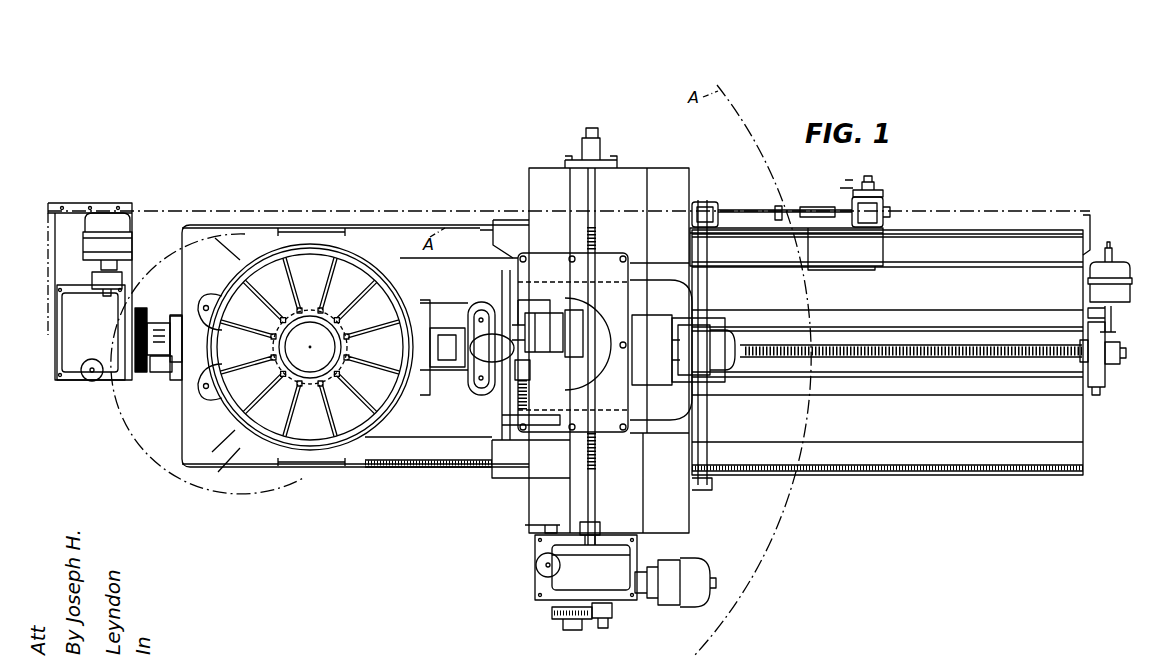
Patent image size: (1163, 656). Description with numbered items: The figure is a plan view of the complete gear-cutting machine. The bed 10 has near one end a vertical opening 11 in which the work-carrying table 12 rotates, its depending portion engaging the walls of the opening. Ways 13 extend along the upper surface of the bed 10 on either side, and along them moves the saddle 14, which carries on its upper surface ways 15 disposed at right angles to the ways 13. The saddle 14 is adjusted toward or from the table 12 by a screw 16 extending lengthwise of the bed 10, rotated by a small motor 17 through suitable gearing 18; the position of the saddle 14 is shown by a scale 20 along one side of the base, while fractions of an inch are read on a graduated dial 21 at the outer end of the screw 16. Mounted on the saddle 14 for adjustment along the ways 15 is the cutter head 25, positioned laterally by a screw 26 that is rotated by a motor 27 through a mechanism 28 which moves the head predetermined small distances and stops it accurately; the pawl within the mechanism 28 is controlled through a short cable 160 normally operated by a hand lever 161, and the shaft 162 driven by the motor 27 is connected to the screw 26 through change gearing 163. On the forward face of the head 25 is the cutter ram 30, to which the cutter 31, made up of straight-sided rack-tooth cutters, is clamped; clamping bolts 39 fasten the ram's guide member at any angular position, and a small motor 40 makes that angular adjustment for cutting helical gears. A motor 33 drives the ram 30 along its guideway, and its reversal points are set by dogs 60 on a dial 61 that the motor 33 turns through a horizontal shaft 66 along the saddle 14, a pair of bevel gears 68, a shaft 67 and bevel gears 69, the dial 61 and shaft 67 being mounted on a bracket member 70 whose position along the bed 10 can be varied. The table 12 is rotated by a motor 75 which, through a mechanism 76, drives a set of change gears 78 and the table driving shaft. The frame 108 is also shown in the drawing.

The bed 10 is at (255, 468).
The vertical opening 11 is at (215, 405).
The work-carrying table 12 is at (318, 255).
The ways 13 is at (948, 237).
The saddle 14 is at (500, 222).
The ways 15 is at (541, 178).
The screw 16 is at (885, 335).
The motor 17 is at (1118, 270).
The gearing 18 is at (1112, 312).
The scale 20 is at (462, 468).
The graduated dial 21 is at (1106, 356).
The cutter head 25 is at (648, 285).
The screw 26 is at (583, 457).
The motor 27 is at (692, 570).
The mechanism 28 is at (560, 588).
The cutter ram 30 is at (443, 328).
The cutter 31 is at (462, 385).
The motor 33 is at (690, 335).
The clamping bolts 39 is at (500, 414).
The motor 40 is at (548, 320).
The dogs 60 is at (878, 180).
The dial 61 is at (850, 185).
The horizontal shaft 66 is at (708, 425).
The shaft 67 is at (757, 201).
The bevel gears 68 is at (705, 204).
The bevel gears 69 is at (880, 207).
The bracket member 70 is at (878, 252).
The motor 75 is at (122, 222).
The mechanism 76 is at (72, 360).
The change gears 78 is at (143, 312).
The guard frame 108 is at (48, 256).
The short cable 160 is at (585, 525).
The hand lever 161 is at (535, 525).
The shaft 162 is at (608, 618).
The change gearing 163 is at (558, 625).